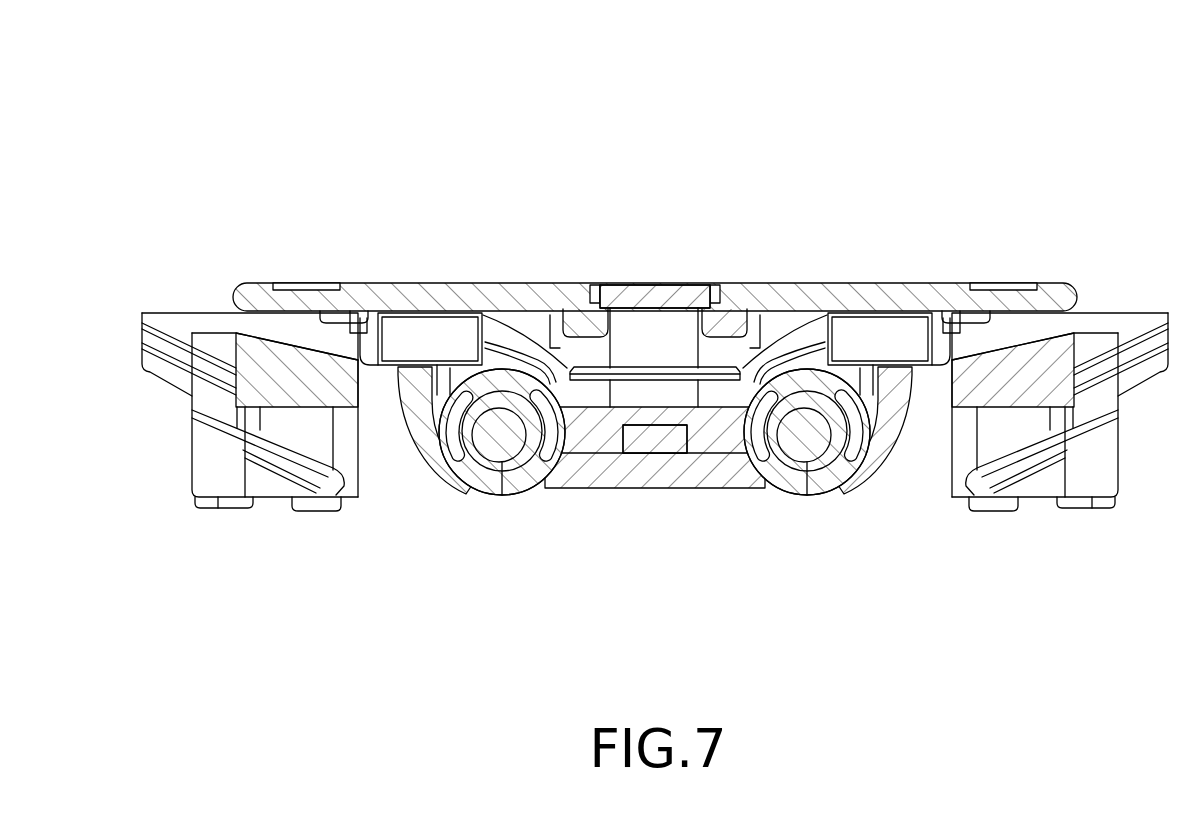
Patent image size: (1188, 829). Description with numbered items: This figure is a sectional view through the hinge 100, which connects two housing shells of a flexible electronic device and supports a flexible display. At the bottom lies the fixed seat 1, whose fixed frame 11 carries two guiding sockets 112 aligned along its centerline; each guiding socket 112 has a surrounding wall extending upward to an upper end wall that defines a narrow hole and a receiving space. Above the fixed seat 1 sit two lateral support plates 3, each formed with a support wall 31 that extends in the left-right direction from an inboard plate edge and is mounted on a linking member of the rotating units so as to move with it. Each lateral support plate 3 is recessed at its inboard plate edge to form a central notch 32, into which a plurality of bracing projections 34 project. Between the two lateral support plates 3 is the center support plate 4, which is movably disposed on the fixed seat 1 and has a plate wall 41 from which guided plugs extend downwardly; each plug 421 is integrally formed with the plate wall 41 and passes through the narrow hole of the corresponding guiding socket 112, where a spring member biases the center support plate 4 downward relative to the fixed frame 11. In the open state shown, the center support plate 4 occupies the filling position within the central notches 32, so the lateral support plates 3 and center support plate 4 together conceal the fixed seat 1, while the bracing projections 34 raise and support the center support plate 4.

The hinge 100 is at (70, 134).
The fixed seat 1 is at (655, 464).
The fixed frame 11 is at (657, 475).
The guiding socket 112 is at (800, 395).
The lateral support plate 3 is at (390, 278).
The support wall 31 is at (434, 290).
The central notch 32 is at (592, 290).
The bracing projection 34 is at (570, 290).
The center support plate 4 is at (650, 356).
The plate wall 41 is at (684, 290).
The plug 421 is at (638, 340).